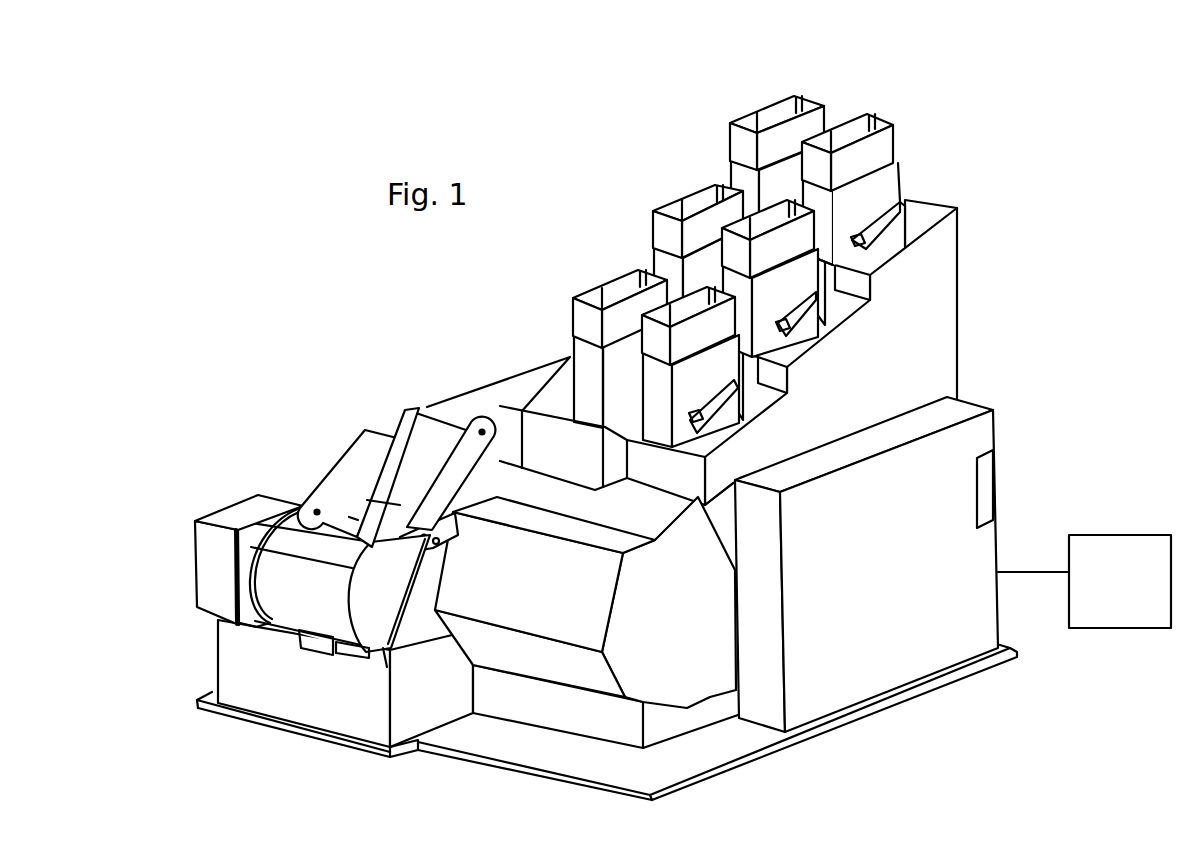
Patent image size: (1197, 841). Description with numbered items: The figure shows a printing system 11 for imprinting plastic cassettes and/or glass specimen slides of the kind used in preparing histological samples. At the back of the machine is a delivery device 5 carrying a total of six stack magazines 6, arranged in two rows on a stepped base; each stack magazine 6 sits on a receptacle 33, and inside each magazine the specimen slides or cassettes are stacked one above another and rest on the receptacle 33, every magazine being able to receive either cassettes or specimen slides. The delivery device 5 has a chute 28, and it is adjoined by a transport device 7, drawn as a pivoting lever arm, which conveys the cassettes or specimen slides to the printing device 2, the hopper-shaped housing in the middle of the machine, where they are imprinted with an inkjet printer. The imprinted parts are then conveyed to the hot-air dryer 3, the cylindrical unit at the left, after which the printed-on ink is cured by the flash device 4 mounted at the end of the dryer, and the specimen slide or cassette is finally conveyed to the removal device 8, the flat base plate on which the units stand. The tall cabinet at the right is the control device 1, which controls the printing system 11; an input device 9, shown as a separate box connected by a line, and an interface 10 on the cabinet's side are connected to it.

The control device 1 is at (900, 594).
The printing device 2 is at (567, 590).
The hot-air dryer 3 is at (412, 469).
The flash device 4 is at (283, 593).
The delivery device 5 is at (930, 157).
The stack magazine 6 is at (612, 272).
The transport device 7 is at (583, 500).
The removal device 8 is at (283, 681).
The input device 9 is at (1135, 598).
The interface 10 is at (995, 480).
The printing system 11 is at (1025, 298).
The chute 28 is at (612, 476).
The receptacle 33 is at (688, 437).